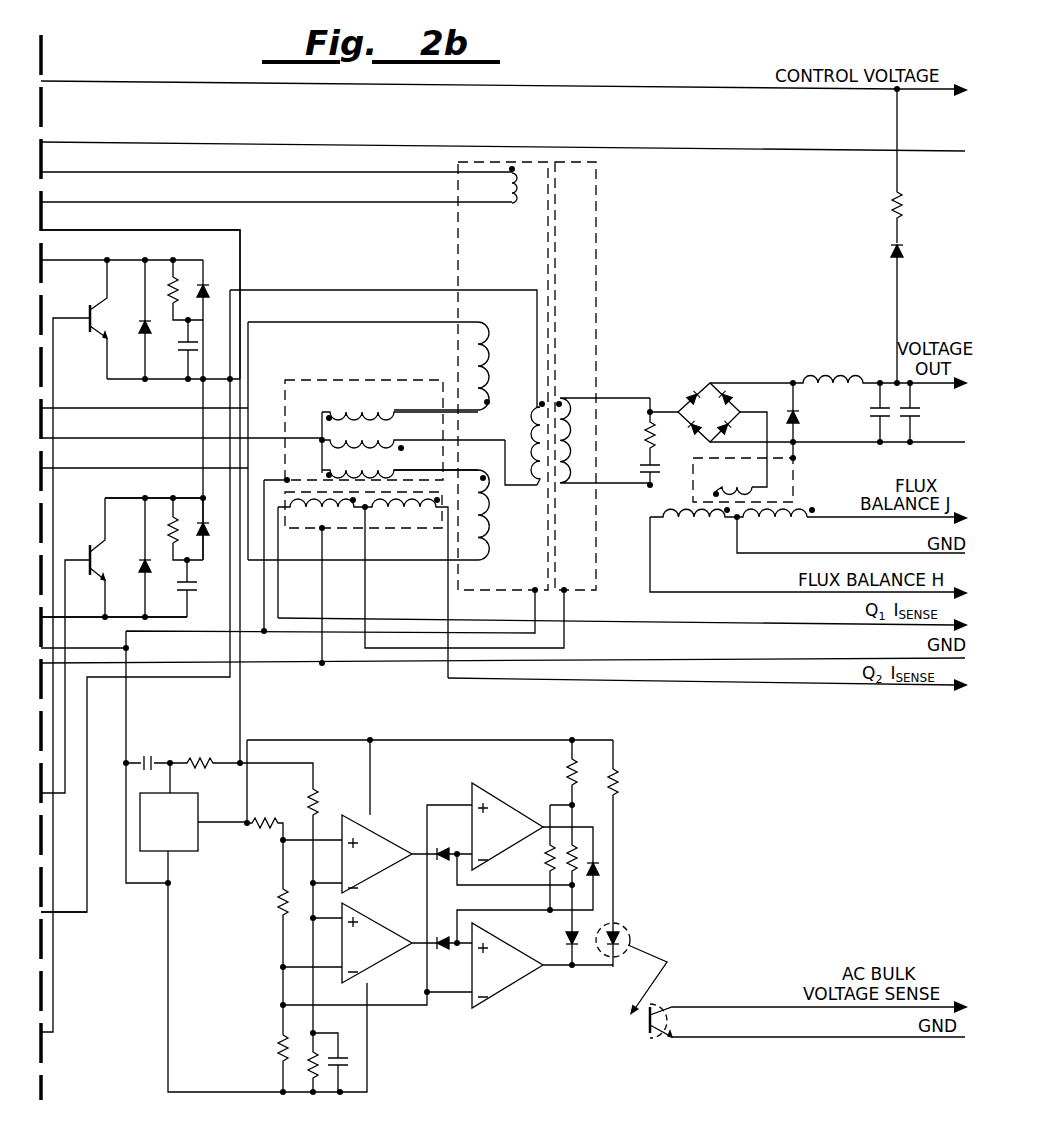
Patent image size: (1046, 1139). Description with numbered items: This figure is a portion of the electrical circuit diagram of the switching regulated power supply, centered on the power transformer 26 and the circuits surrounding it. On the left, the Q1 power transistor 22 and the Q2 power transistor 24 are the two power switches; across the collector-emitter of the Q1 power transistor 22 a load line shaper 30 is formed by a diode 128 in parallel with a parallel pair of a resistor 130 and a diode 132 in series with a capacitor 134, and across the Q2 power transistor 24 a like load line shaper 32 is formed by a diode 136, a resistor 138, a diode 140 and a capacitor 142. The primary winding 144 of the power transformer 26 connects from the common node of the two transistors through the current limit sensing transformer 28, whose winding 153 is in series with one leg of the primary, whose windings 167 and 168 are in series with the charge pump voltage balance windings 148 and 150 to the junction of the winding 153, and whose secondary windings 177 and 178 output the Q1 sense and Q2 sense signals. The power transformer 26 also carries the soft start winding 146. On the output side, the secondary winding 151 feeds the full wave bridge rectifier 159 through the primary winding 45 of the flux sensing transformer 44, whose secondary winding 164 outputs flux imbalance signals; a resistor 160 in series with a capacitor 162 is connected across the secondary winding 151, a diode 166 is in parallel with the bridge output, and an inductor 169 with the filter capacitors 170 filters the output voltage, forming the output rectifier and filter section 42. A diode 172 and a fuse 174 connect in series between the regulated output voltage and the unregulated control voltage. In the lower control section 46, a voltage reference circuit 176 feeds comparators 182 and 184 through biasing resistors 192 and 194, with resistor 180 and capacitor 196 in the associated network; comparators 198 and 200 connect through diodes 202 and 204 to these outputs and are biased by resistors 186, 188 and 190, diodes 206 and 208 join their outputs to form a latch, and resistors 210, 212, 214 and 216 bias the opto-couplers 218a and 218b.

The Q1 power transistor 22 is at (72, 290).
The Q2 power transistor 24 is at (72, 538).
The power transformer 26 is at (557, 145).
The current limit sensing transformer 28 is at (298, 374).
The load line shaper 30 is at (252, 276).
The load line shaper 32 is at (200, 590).
The output rectifier filter 42 is at (743, 358).
The flux sensing transformer 44 is at (816, 499).
The primary winding of the flux sensing transformer 45 is at (728, 487).
The comparator circuit 46 is at (645, 749).
The diode 128 is at (141, 330).
The resistor 130 is at (172, 284).
The diode 132 is at (207, 285).
The capacitor 134 is at (188, 348).
The diode 136 is at (141, 567).
The resistor 138 is at (170, 520).
The diode 140 is at (204, 540).
The capacitor 142 is at (186, 588).
The primary winding 144 is at (533, 422).
The soft start winding 146 is at (510, 188).
The charge pump voltage balance winding 148 is at (488, 360).
The charge pump voltage balance winding 150 is at (486, 534).
The secondary winding 151 is at (574, 424).
The winding 153 is at (381, 439).
The full wave bridge rectifier 159 is at (692, 390).
The resistor 160 is at (651, 436).
The capacitor 162 is at (646, 472).
The secondary winding of the flux sensing transformer 164 is at (712, 547).
The diode 166 is at (797, 420).
The winding 167 is at (381, 411).
The winding 168 is at (386, 470).
The inductor 169 is at (866, 378).
The filter capacitors 170 is at (907, 418).
The diode 172 is at (891, 254).
The fuse 174 is at (893, 208).
The voltage reference circuit 176 is at (185, 836).
The secondary winding 177 is at (320, 510).
The secondary winding 178 is at (401, 512).
The resistor 180 is at (218, 758).
The comparator 182 is at (390, 866).
The comparator 184 is at (390, 953).
The biasing resistor 186 is at (286, 812).
The biasing resistor 188 is at (286, 906).
The biasing resistor 190 is at (285, 1046).
The biasing resistor 192 is at (331, 803).
The biasing resistor 194 is at (310, 1078).
The capacitor 196 is at (350, 1066).
The comparator 198 is at (520, 836).
The comparator 200 is at (520, 980).
The diode 202 is at (502, 858).
The diode 204 is at (512, 899).
The diode 206 is at (600, 870).
The diode 208 is at (568, 940).
The resistor 210 is at (570, 778).
The resistor 212 is at (537, 857).
The resistor 214 is at (578, 852).
The resistor 216 is at (617, 788).
The opto-coupler 218a is at (618, 920).
The opto-coupler 218b is at (659, 1005).